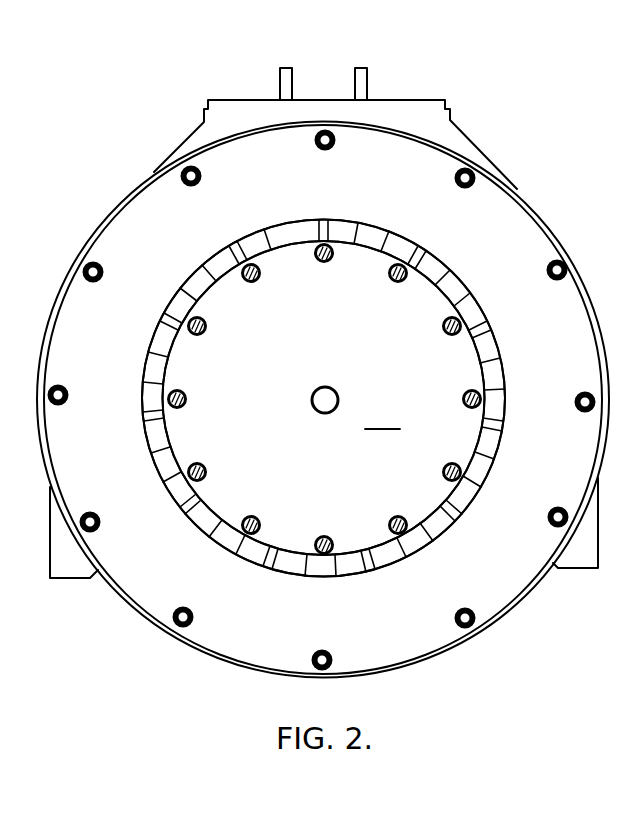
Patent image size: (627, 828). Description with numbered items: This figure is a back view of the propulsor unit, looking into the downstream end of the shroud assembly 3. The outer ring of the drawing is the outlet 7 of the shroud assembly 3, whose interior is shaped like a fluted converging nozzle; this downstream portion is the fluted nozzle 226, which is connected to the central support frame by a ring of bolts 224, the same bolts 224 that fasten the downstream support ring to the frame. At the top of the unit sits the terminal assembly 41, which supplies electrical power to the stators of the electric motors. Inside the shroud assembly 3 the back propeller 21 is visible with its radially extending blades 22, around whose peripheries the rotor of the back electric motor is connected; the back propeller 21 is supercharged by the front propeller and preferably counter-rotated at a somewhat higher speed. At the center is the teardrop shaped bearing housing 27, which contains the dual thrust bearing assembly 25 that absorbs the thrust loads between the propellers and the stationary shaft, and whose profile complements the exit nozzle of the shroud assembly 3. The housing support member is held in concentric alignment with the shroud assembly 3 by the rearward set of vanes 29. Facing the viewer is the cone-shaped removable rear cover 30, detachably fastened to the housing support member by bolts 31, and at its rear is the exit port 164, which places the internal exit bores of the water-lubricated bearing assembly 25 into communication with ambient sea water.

The shroud assembly 3 is at (170, 216).
The outlet 7 is at (466, 498).
The back propeller 21 is at (250, 552).
The blades 22 is at (167, 498).
The dual thrust bearing assembly 25 is at (380, 321).
The bearing housing 27 is at (380, 500).
The rearward set of vanes 29 is at (408, 250).
The removable rear cover 30 is at (382, 418).
The bolts 31 is at (503, 373).
The terminal assembly 41 is at (244, 99).
The exit port 164 is at (312, 397).
The bolts 224 is at (480, 182).
The fluted nozzle 226 is at (158, 251).